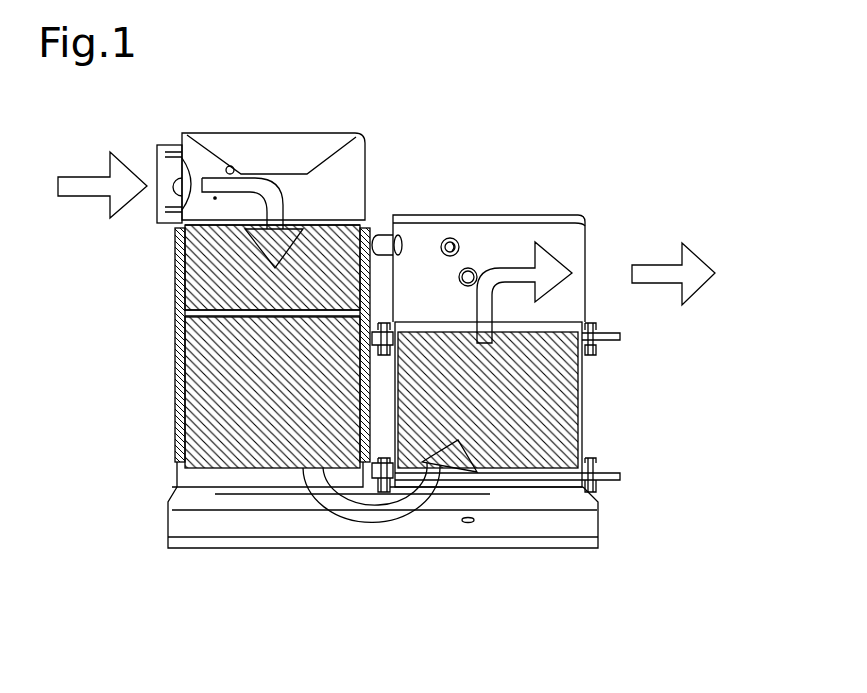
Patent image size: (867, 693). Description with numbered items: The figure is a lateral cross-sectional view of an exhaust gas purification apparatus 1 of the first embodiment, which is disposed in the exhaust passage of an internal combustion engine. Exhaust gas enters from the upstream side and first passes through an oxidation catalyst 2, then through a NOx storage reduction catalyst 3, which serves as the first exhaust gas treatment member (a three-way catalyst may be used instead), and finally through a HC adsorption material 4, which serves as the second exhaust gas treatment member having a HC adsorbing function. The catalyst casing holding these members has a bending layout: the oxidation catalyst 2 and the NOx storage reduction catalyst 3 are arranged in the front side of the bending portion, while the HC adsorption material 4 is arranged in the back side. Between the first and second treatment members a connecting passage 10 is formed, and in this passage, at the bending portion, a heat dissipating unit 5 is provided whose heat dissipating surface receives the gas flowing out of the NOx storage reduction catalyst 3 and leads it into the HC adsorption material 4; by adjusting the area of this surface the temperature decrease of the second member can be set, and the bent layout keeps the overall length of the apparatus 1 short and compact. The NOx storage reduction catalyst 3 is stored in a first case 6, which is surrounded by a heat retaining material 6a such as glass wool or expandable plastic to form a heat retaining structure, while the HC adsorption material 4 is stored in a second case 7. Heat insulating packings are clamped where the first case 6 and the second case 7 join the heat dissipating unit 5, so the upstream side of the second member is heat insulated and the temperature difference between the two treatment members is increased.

The exhaust gas purification apparatus 1 is at (478, 184).
The oxidation catalyst 2 is at (185, 271).
The NOx storage reduction catalyst 3 is at (203, 389).
The HC adsorption material 4 is at (550, 385).
The heat dissipating unit 5 is at (327, 548).
The first case 6 is at (180, 355).
The heat retaining material 6a is at (180, 317).
The second case 7 is at (582, 425).
The connecting passage 10 is at (297, 505).